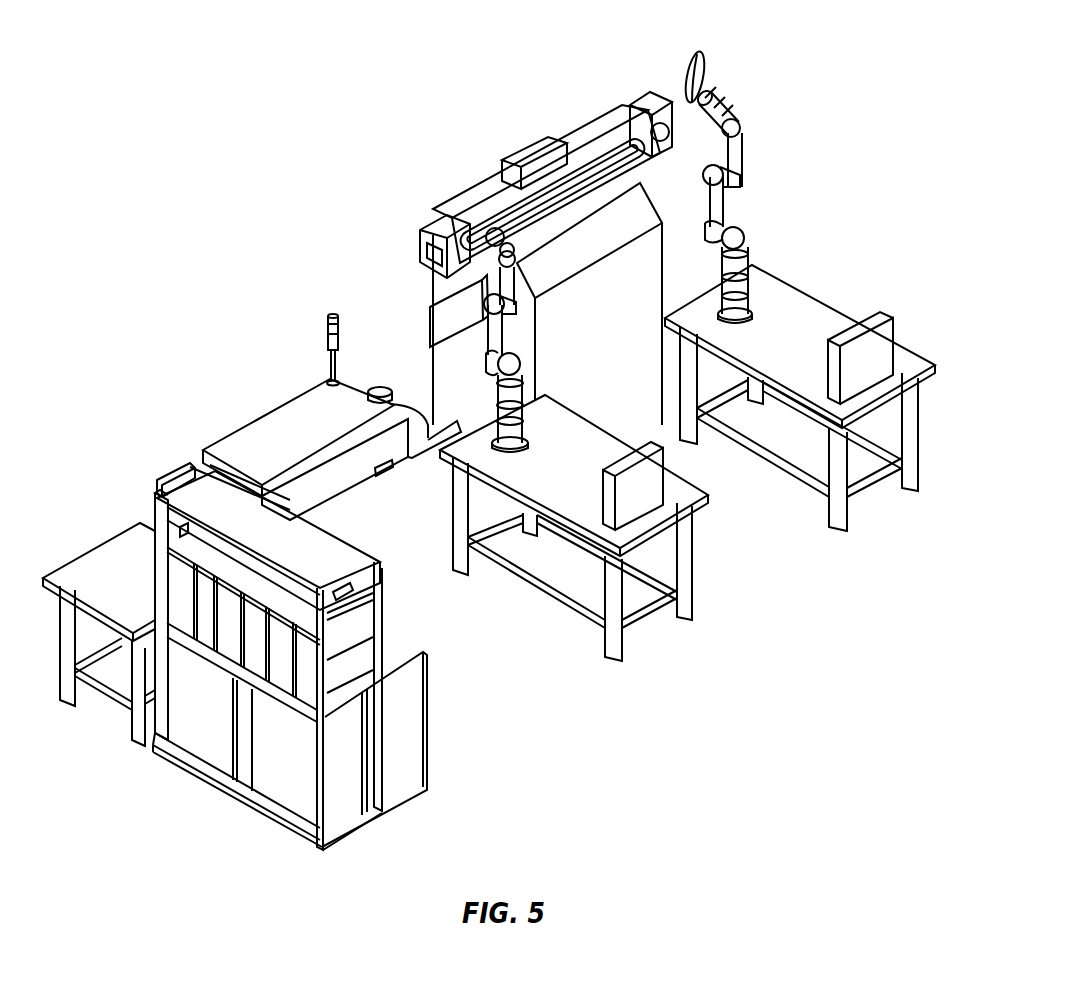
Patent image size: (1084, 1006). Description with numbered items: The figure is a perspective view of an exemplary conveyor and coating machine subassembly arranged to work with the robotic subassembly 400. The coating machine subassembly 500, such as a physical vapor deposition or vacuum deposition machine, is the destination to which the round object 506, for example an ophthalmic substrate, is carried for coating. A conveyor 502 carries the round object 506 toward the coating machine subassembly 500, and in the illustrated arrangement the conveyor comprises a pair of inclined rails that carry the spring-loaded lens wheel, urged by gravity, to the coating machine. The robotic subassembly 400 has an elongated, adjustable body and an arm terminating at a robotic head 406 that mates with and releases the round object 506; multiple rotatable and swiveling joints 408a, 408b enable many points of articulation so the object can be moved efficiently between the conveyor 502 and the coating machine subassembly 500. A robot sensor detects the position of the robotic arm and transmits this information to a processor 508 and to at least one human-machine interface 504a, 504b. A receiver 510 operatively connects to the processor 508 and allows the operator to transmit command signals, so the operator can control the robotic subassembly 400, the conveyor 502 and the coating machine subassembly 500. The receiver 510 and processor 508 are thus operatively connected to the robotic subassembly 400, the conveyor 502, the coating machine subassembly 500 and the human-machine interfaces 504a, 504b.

The robotic subassembly 400 is at (512, 287).
The robotic head 406 is at (712, 92).
The rotatable and swiveling joint 408a is at (508, 363).
The rotatable and swiveling joint 408b is at (740, 238).
The coating machine subassembly 500 is at (265, 423).
The conveyor 502 is at (595, 137).
The human-machine interface 504a is at (640, 487).
The human-machine interface 504b is at (880, 317).
The round object 506 is at (690, 60).
The processor 508 is at (540, 143).
The receiver 510 is at (325, 315).